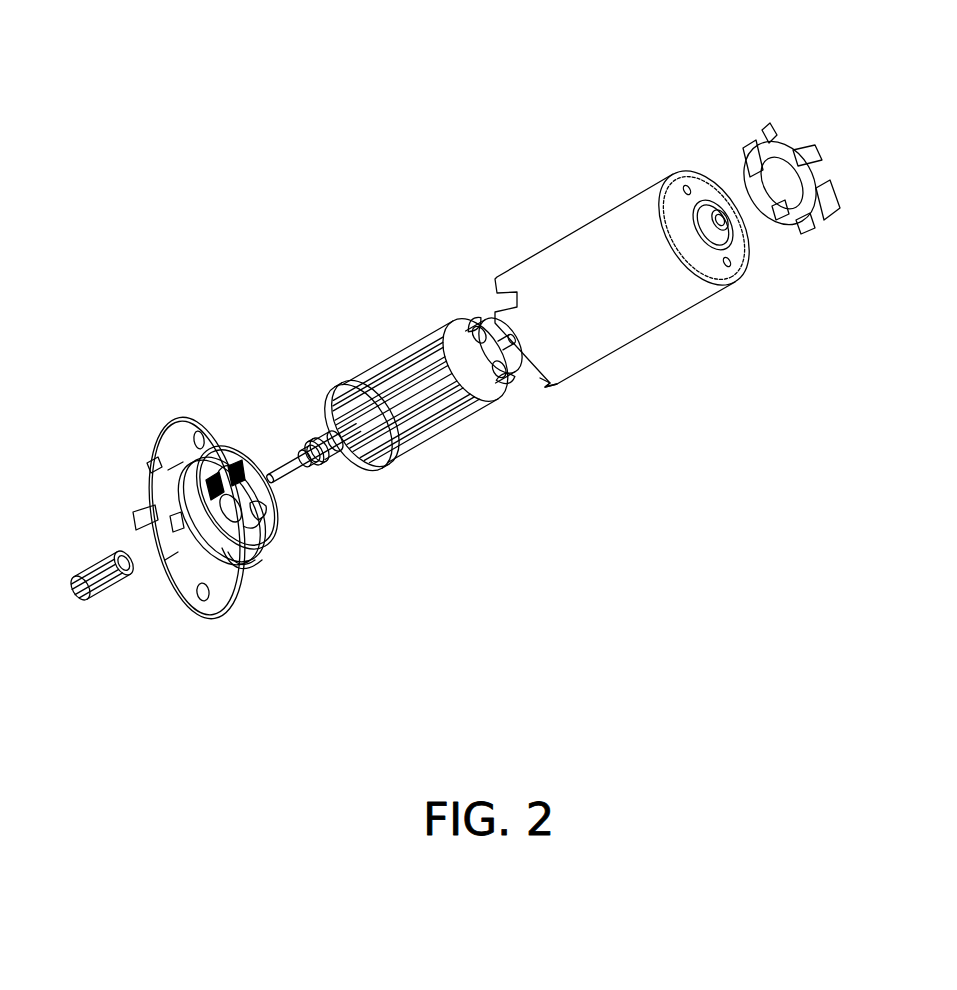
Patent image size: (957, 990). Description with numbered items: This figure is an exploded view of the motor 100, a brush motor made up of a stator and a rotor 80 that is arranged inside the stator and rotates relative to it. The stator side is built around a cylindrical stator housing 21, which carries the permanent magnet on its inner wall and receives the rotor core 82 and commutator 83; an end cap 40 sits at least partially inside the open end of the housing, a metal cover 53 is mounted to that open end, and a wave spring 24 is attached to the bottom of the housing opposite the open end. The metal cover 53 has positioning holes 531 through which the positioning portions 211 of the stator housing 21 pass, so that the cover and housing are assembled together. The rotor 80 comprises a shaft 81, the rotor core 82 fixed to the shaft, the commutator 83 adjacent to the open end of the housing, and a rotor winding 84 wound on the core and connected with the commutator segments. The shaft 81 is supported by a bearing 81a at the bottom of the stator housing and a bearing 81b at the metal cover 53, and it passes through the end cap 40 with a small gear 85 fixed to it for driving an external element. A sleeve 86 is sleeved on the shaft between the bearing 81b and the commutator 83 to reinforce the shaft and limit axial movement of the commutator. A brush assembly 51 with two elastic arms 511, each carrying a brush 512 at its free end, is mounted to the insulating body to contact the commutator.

The motor 100 is at (497, 34).
The stator housing 21 is at (626, 313).
The positioning portions 211 is at (518, 362).
The wave spring 24 is at (818, 232).
The end cap 40 is at (230, 567).
The brush assembly 51 is at (250, 457).
The elastic arms 511 is at (260, 510).
The brushes 512 is at (222, 448).
The metal cover 53 is at (217, 597).
The positioning holes 531 is at (180, 543).
The rotor 80 is at (408, 350).
The shaft 81 is at (285, 472).
The bearing 81a is at (727, 225).
The bearing 81b is at (263, 538).
The rotor core 82 is at (457, 323).
The commutator 83 is at (338, 397).
The rotor winding 84 is at (505, 380).
The small gear 85 is at (92, 600).
The sleeve 86 is at (328, 452).